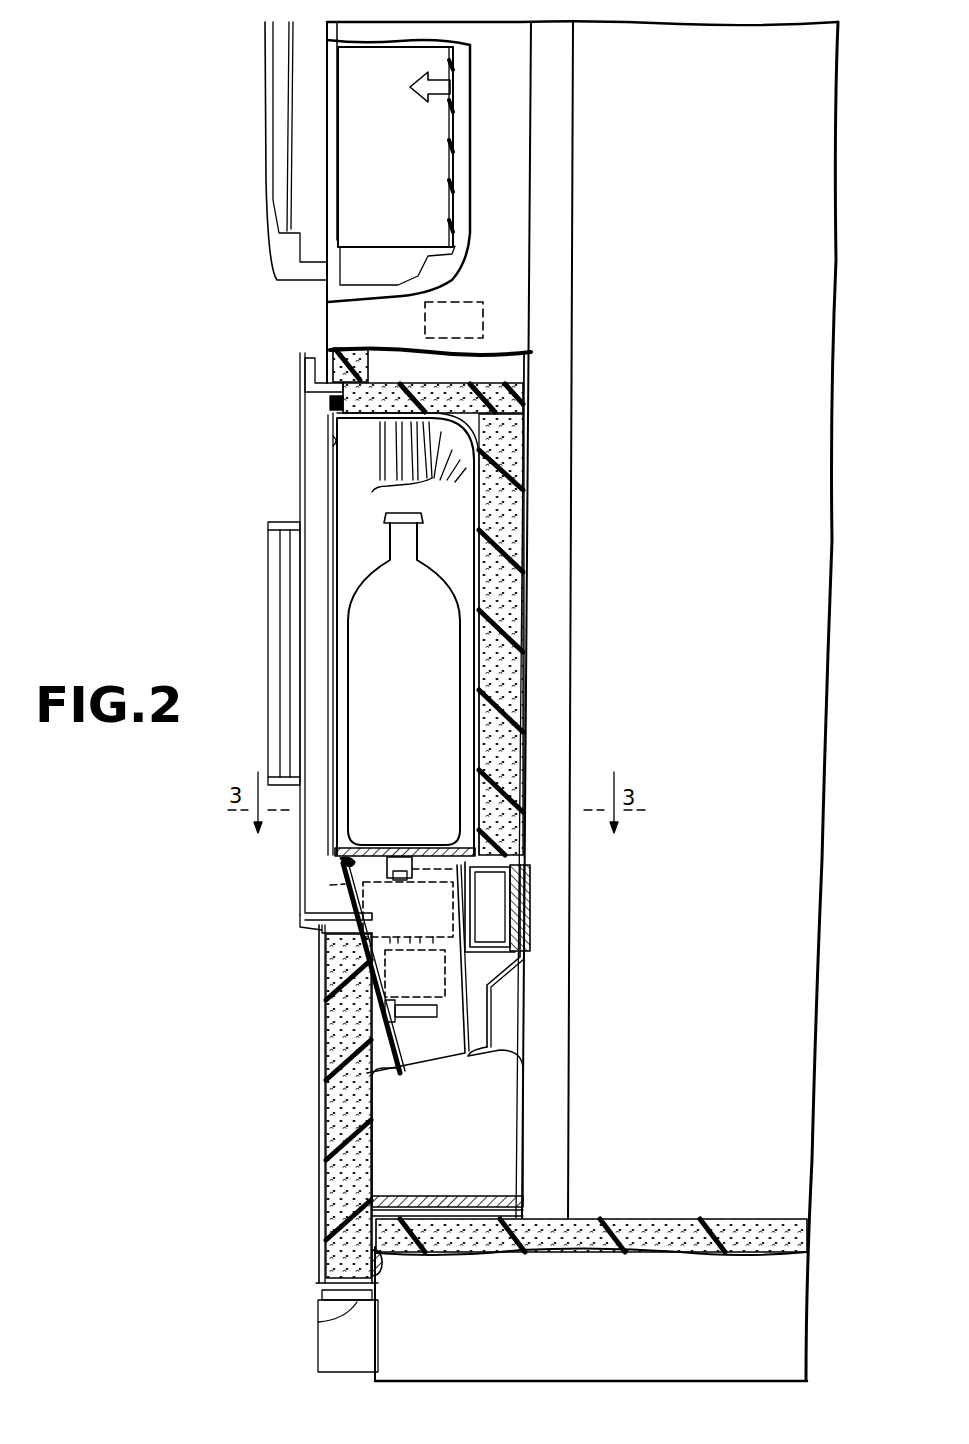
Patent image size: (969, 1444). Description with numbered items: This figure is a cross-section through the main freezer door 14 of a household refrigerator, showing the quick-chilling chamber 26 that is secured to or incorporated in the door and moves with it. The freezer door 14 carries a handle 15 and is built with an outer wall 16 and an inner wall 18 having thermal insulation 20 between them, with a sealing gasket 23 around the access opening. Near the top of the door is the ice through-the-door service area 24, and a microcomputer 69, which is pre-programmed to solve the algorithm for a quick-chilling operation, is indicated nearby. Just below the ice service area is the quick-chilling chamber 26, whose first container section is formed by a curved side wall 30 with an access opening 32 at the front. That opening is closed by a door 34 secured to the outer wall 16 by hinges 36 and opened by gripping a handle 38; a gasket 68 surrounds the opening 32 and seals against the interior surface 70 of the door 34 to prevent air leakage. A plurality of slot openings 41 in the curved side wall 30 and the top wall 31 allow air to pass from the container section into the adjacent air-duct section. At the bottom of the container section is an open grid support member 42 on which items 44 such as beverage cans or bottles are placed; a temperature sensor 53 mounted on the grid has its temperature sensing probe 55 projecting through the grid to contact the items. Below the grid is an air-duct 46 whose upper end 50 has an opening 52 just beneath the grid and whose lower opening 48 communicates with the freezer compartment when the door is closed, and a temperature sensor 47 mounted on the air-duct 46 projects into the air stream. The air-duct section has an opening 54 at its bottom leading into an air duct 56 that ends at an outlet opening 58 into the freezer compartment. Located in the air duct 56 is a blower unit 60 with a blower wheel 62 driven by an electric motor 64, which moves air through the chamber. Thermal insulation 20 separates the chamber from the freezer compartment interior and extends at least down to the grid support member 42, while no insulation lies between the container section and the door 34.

The main freezer door 14 is at (327, 317).
The handle 15 is at (264, 128).
The outer wall 16 is at (323, 1035).
The inner wall 18 is at (531, 560).
The thermal insulation 20 is at (523, 485).
The sealing gasket 23 is at (384, 1275).
The ice through-the-door service area 24 is at (408, 166).
The quick-chilling chamber 26 is at (533, 522).
The curved side wall 30 is at (474, 540).
The top wall 31 is at (413, 402).
The access opening 32 is at (337, 503).
The door 34 is at (300, 478).
The hinges 36 is at (318, 403).
The handle 38 is at (268, 632).
The slot openings 41 is at (410, 484).
The open grid support member 42 is at (370, 848).
The items to be quickly chilled 44 is at (415, 626).
The air-duct 46 is at (390, 1070).
The temperature sensor 47 is at (420, 1016).
The opening 48 is at (460, 1065).
The upper end 50 is at (330, 920).
The opening 52 is at (345, 861).
The temperature sensor 53 is at (400, 880).
The opening 54 is at (425, 866).
The temperature sensing probe 55 is at (400, 857).
The air duct 56 is at (330, 885).
The outlet opening 58 is at (535, 893).
The blower unit 60 is at (475, 947).
The blower wheel 62 is at (470, 918).
The electric motor 64 is at (437, 985).
The gasket 68 is at (330, 407).
The microcomputer 69 is at (470, 302).
The interior surface 70 is at (333, 441).